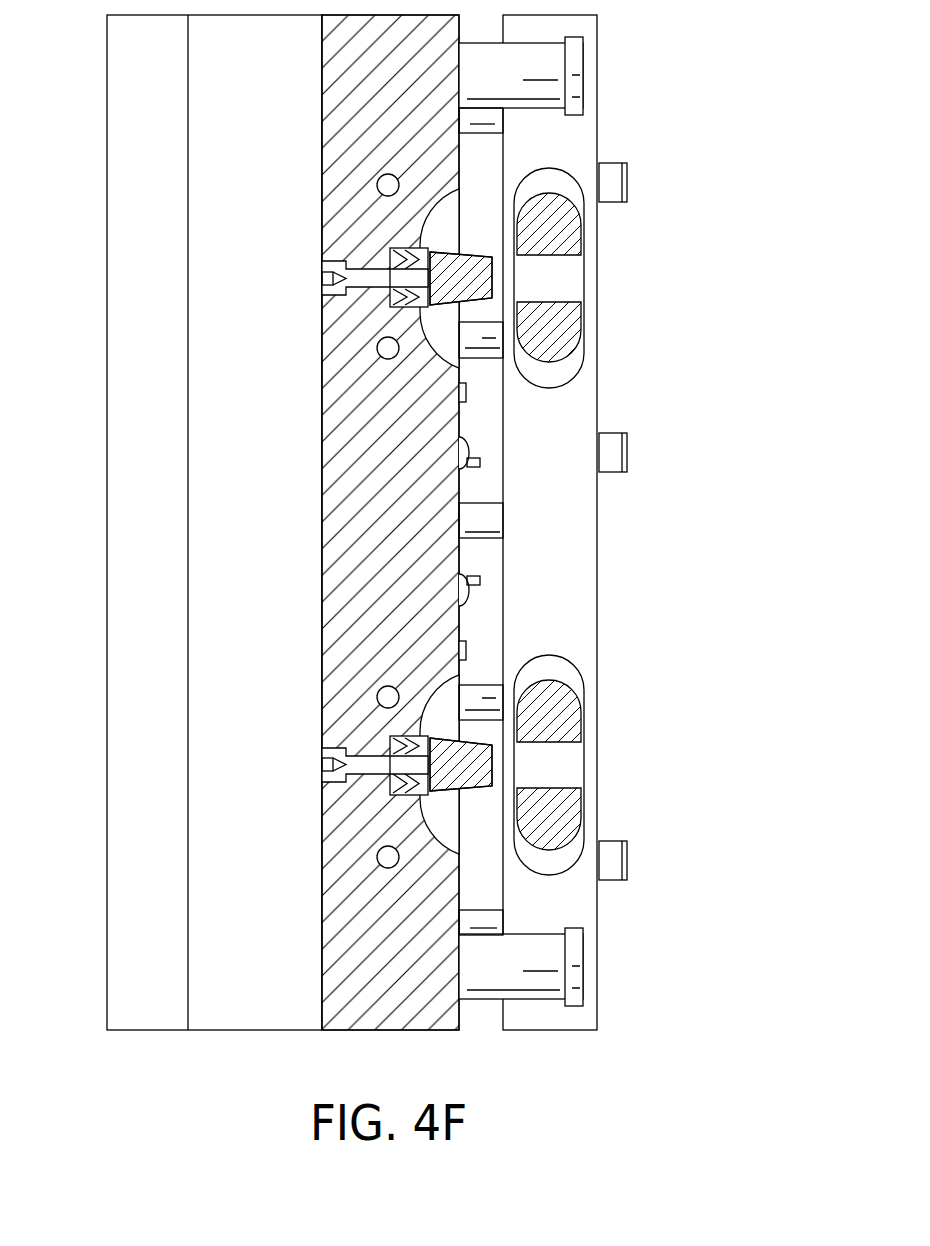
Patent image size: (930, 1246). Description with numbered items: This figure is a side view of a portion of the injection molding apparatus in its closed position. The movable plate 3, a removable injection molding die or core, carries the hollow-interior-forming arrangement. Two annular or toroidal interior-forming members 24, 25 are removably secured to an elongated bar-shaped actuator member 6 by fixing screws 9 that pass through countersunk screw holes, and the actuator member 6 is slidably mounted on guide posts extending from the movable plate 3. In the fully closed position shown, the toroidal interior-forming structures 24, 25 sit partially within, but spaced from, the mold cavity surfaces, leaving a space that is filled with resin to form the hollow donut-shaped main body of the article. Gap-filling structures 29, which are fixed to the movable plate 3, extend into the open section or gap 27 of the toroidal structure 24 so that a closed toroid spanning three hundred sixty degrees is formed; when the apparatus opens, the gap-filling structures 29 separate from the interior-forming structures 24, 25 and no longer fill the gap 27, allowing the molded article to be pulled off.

The movable plate 3 is at (418, 502).
The actuator member 6 is at (340, 525).
The fixing screws 9 is at (322, 275).
The toroidal interior-forming member 24 is at (557, 230).
The toroidal interior-forming member 25 is at (553, 694).
The open section or gap 27 is at (550, 282).
The gap-filling structures 29 is at (555, 330).